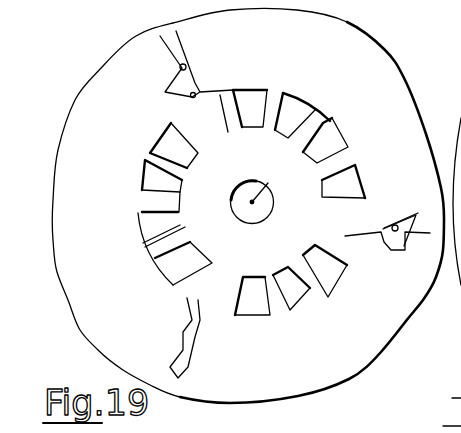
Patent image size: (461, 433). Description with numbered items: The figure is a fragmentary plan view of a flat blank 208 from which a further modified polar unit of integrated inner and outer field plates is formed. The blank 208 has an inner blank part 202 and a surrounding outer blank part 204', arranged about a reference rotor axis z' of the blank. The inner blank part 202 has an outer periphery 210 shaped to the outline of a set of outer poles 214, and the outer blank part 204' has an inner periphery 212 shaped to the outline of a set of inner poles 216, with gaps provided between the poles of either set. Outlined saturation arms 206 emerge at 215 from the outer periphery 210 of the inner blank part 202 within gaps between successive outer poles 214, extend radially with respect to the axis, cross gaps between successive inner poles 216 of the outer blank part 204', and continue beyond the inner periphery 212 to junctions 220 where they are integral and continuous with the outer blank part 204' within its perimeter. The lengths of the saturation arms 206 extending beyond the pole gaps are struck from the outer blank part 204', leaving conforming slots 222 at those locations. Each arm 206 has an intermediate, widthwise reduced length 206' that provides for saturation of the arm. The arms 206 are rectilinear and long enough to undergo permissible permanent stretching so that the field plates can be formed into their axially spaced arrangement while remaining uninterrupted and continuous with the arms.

The inner blank part 202 is at (178, 199).
The outer blank part 204' is at (299, 111).
The saturation arm 206 is at (291, 204).
The widthwise reduced length 206' is at (312, 200).
The flat blank 208 is at (386, 50).
The outer periphery 210 is at (146, 178).
The inner periphery 212 is at (335, 157).
The outer pole 214 is at (227, 102).
The emergence point of saturation arm 215 is at (220, 137).
The inner pole 216 is at (195, 150).
The junction 220 is at (167, 28).
The conforming slot 222 is at (186, 100).